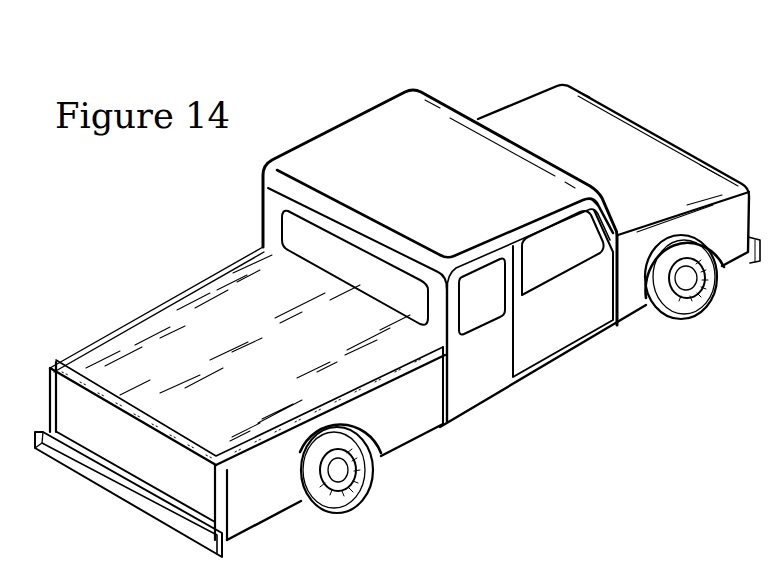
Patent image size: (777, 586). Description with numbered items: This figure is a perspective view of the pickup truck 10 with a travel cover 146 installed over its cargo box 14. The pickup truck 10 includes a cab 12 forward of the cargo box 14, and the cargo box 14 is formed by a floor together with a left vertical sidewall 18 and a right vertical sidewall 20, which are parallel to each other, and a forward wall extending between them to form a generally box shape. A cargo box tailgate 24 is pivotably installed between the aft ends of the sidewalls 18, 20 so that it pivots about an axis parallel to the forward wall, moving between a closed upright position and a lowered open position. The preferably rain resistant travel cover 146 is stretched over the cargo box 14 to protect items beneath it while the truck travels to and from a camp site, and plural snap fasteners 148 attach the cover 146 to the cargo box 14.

The pickup truck 10 is at (475, 75).
The cab 12 is at (508, 398).
The cargo box 14 is at (409, 452).
The left vertical sidewall 18 is at (50, 412).
The right vertical sidewall 20 is at (247, 521).
The cargo box tailgate 24 is at (108, 445).
The travel cover 146 is at (214, 292).
The snap fasteners 148 is at (147, 428).